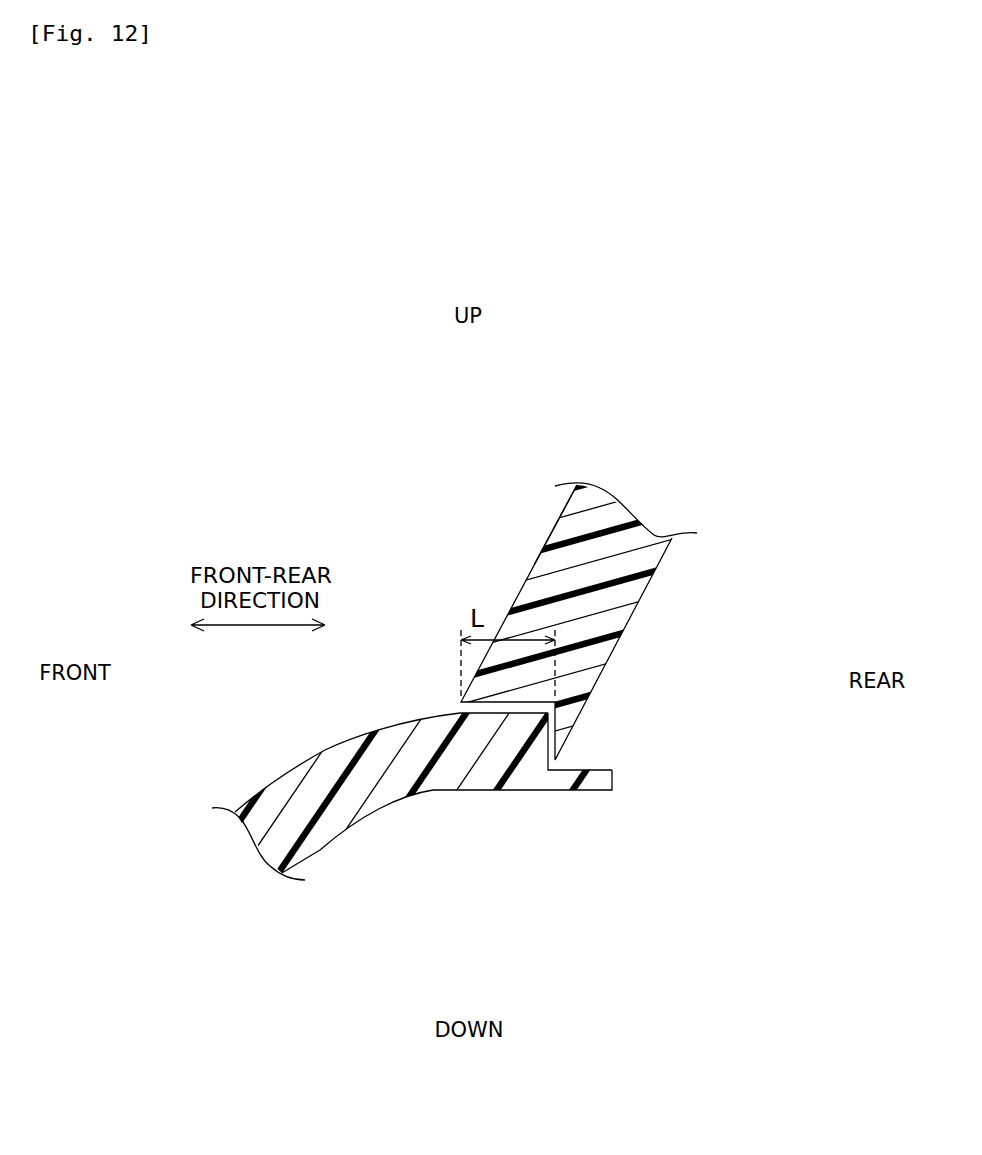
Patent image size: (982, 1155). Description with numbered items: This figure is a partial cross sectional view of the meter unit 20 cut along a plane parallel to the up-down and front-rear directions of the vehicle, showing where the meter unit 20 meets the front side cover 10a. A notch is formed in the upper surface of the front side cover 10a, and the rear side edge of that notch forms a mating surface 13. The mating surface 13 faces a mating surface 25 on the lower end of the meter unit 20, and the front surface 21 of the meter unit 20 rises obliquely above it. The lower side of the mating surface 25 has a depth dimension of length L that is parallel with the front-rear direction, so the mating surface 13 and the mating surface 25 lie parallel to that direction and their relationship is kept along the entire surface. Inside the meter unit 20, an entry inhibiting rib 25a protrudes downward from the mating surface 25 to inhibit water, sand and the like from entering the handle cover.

The meter unit 20 is at (530, 507).
The front surface of seat back 21 is at (534, 565).
The mating surface 13 is at (455, 793).
The front side cover 10a is at (288, 770).
The mating surface 25 is at (499, 702).
The entry inhibiting rib 25a is at (555, 740).